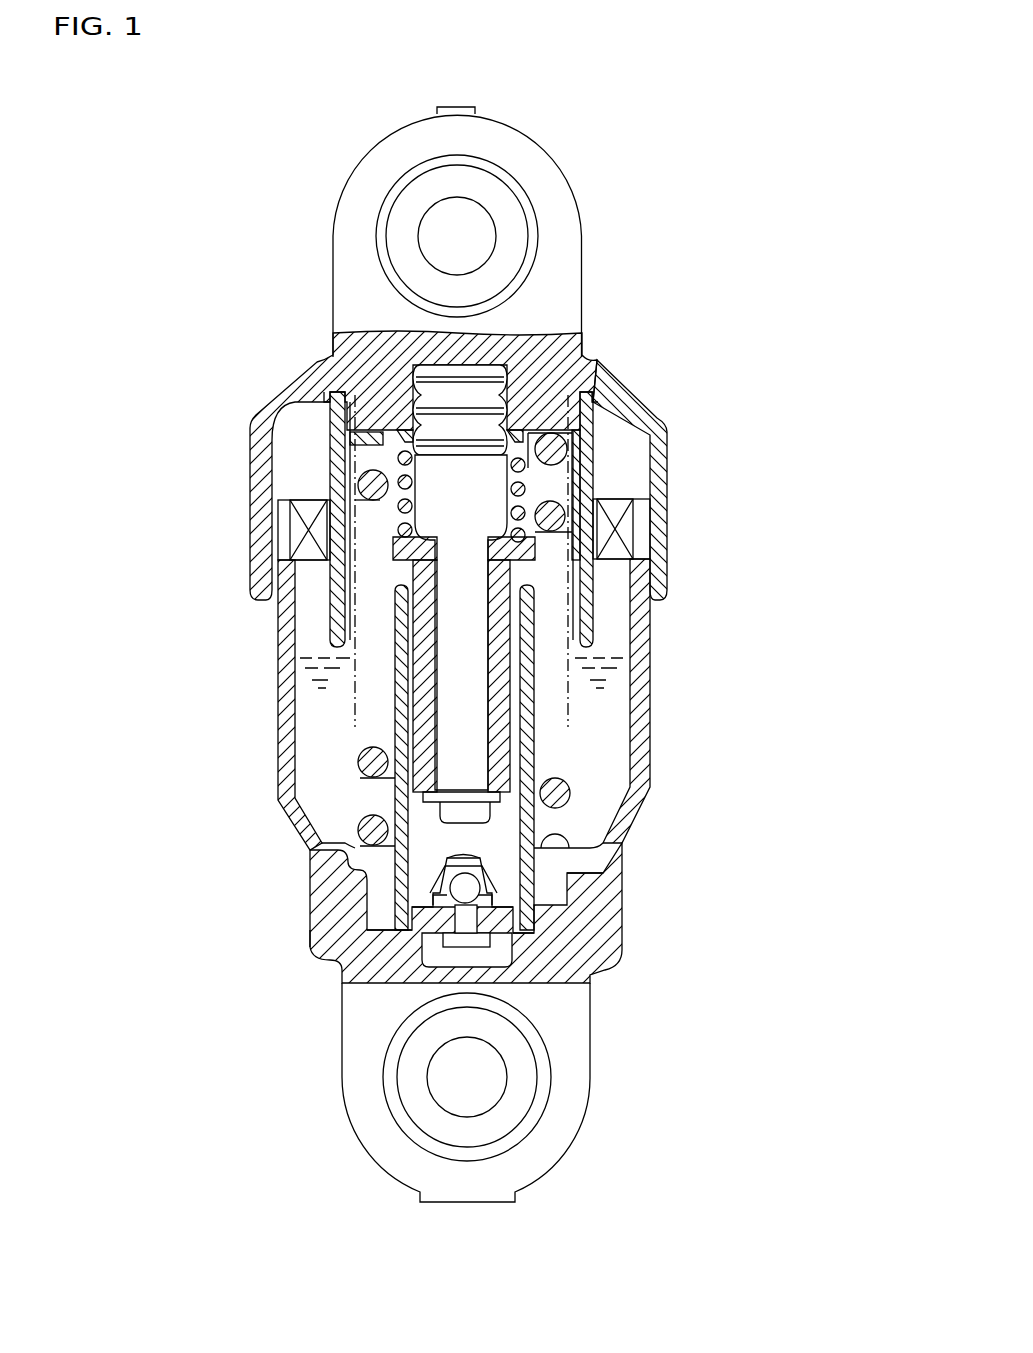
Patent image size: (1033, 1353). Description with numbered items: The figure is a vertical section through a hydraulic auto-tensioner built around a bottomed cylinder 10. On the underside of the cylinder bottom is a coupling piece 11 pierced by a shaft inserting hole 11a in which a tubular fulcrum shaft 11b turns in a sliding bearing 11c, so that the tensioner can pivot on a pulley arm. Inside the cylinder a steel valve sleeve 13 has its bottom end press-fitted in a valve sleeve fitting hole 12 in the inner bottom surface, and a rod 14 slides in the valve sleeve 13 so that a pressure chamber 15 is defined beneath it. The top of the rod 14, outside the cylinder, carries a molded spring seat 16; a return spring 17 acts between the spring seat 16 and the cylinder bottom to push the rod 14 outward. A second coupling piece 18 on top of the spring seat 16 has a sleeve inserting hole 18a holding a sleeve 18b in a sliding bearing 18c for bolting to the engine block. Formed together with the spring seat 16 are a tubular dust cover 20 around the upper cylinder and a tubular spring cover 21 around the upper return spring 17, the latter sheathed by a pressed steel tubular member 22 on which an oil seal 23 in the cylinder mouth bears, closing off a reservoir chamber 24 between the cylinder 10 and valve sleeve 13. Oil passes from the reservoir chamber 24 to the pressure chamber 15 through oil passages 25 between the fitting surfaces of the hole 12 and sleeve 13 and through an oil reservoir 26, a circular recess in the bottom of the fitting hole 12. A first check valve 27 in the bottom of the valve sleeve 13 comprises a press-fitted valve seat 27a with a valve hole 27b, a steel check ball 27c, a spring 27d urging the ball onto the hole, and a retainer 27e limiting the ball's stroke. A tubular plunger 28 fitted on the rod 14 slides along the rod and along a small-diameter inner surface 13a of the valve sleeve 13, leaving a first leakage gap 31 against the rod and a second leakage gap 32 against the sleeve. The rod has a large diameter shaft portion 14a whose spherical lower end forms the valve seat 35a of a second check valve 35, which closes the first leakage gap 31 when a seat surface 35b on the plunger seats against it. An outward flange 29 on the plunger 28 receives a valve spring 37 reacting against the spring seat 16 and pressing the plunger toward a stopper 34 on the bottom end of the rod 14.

The cylinder 10 is at (285, 750).
The coupling piece 11 is at (353, 1048).
The shaft inserting hole 11a is at (385, 1087).
The fulcrum shaft 11b is at (415, 1112).
The sliding bearing 11c is at (428, 1150).
The valve sleeve fitting hole 12 is at (345, 890).
The valve sleeve 13 is at (397, 790).
The small-diameter radially inner surface 13a is at (417, 697).
The rod 14 is at (447, 632).
The large diameter shaft portion 14a is at (505, 432).
The pressure chamber 15 is at (315, 858).
The spring seat 16 is at (320, 365).
The return spring 17 is at (567, 520).
The coupling piece 18 is at (362, 163).
The sleeve inserting hole 18a is at (382, 228).
The sleeve 18b is at (497, 192).
The sliding bearing 18c is at (537, 232).
The dust cover 20 is at (253, 448).
The spring cover 21 is at (330, 485).
The tubular member 22 is at (295, 518).
The oil seal 23 is at (293, 540).
The reservoir chamber 24 is at (310, 650).
The oil passages 25 is at (545, 915).
The oil reservoir 26 is at (487, 957).
The first check valve 27 is at (540, 873).
The valve seat 27a is at (533, 937).
The valve hole 27b is at (505, 982).
The check ball 27c is at (313, 943).
The spring 27d is at (550, 897).
The retainer 27e is at (496, 865).
The plunger 28 is at (507, 577).
The flange 29 is at (597, 528).
The first leakage gap 31 is at (530, 630).
The second leakage gap 32 is at (600, 688).
The stopper 34 is at (537, 793).
The second check valve 35 is at (533, 493).
The valve seat 35a is at (533, 547).
The seat surface 35b is at (435, 545).
The valve spring 37 is at (523, 485).